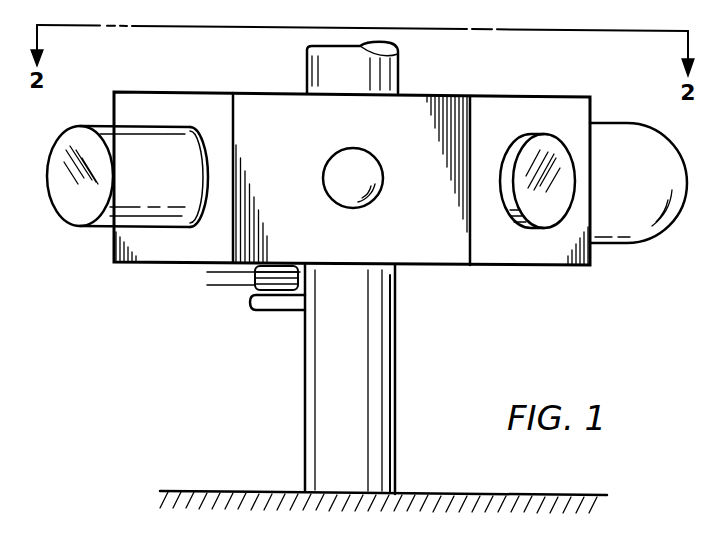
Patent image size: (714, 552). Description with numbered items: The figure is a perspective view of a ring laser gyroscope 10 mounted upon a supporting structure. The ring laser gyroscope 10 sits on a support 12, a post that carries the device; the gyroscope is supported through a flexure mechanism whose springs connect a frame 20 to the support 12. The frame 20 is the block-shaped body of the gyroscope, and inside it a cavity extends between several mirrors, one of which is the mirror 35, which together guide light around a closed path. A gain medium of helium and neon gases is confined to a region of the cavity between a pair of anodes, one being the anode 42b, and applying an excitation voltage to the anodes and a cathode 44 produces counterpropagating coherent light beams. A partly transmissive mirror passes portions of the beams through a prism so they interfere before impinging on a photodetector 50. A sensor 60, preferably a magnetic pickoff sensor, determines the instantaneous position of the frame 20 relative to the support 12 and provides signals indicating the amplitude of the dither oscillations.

The ring laser gyroscope 10 is at (108, 276).
The support 12 is at (305, 416).
The frame 20 is at (442, 258).
The mirror 35 is at (562, 148).
The anode 42b is at (345, 160).
The cathode 44 is at (645, 236).
The photodetector 50 is at (60, 152).
The sensor 60 is at (242, 292).